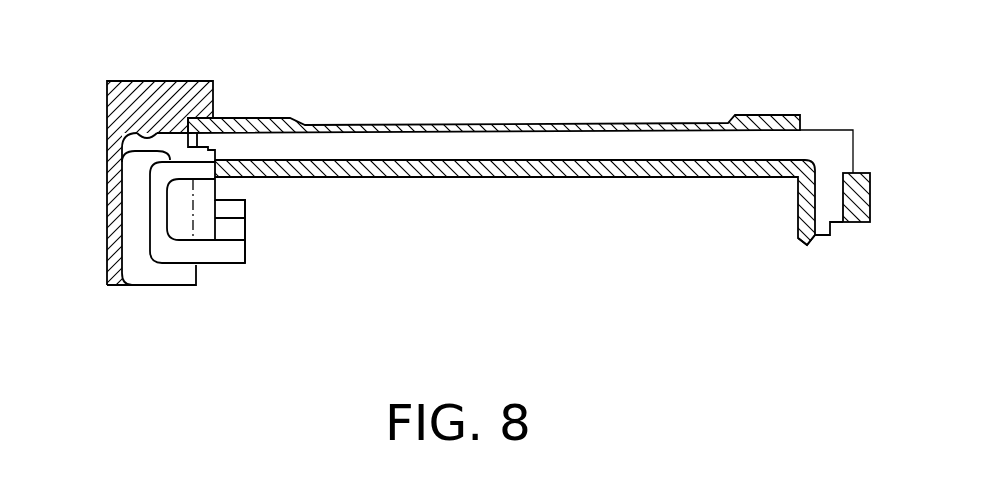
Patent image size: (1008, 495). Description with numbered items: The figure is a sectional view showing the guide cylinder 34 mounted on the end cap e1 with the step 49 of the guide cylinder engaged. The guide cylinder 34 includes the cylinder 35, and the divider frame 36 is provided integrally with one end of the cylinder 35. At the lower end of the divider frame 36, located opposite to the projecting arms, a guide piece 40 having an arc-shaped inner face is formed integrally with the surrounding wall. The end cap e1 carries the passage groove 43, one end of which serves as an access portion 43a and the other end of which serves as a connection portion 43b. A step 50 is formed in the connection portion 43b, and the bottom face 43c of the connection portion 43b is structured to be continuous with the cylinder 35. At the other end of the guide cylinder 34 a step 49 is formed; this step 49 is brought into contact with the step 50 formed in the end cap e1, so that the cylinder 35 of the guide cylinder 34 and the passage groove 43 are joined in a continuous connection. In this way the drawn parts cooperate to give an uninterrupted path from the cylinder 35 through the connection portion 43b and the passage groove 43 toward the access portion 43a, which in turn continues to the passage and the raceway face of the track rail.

The guide cylinder 34 is at (596, 186).
The cylinder 35 is at (513, 177).
The divider frame 36 is at (855, 224).
The guide piece 40 is at (805, 250).
The passage groove 43 is at (131, 226).
The access portion 43a is at (178, 273).
The connection portion 43b is at (122, 160).
The bottom face 43c is at (142, 131).
The step 49 is at (200, 146).
The step 50 is at (183, 120).
The end cap e1 is at (115, 287).